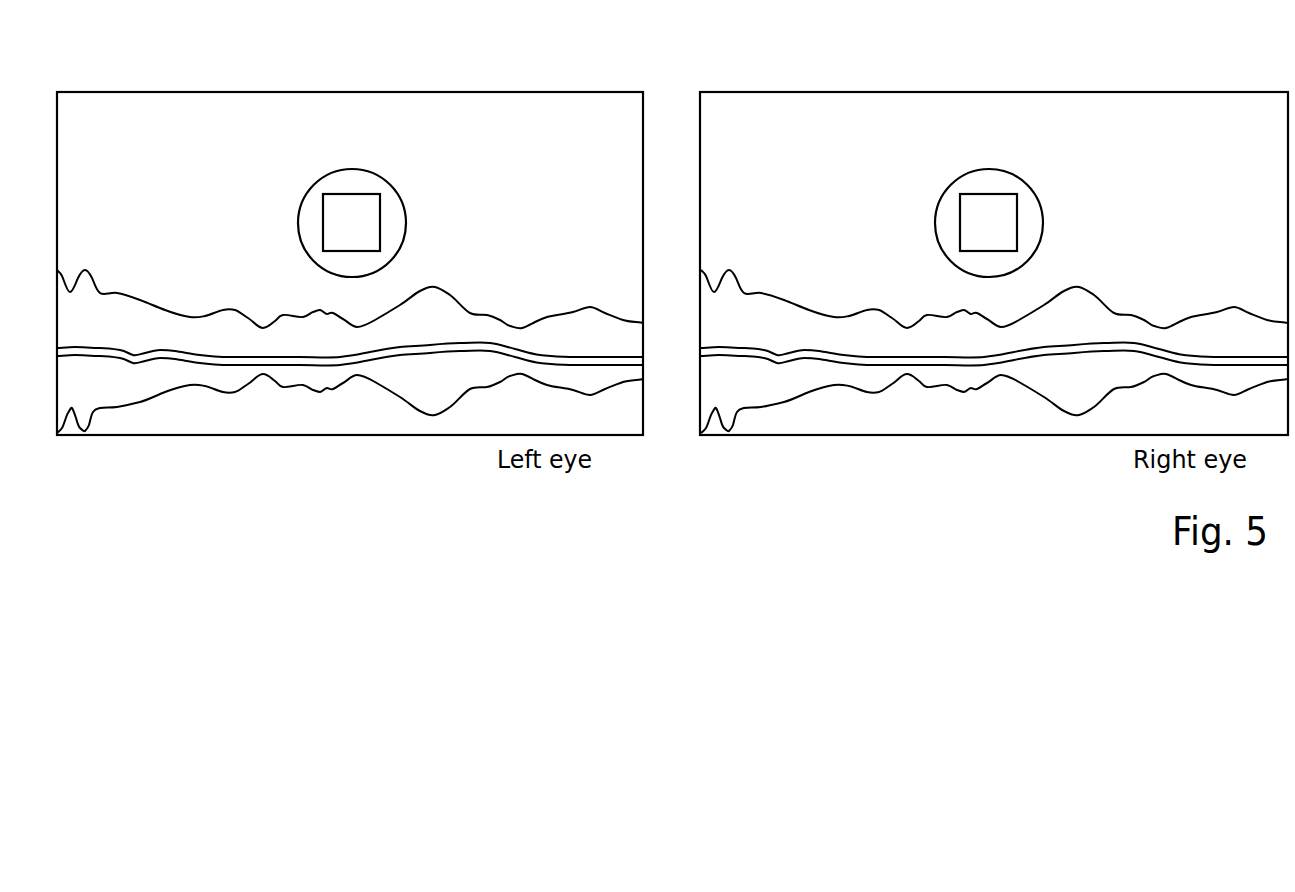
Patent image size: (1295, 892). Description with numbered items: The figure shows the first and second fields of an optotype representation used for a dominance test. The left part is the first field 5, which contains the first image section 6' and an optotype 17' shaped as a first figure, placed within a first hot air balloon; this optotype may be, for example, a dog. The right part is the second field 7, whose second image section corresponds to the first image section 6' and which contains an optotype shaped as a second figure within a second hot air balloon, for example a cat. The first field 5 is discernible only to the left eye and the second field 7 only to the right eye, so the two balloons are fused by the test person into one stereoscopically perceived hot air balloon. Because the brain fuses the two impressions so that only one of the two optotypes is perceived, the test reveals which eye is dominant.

The first field 5 is at (400, 92).
The first image section 6' is at (350, 234).
The optotype shaped as "FIG. 1" 17' is at (352, 156).
The second field 7 is at (1045, 92).